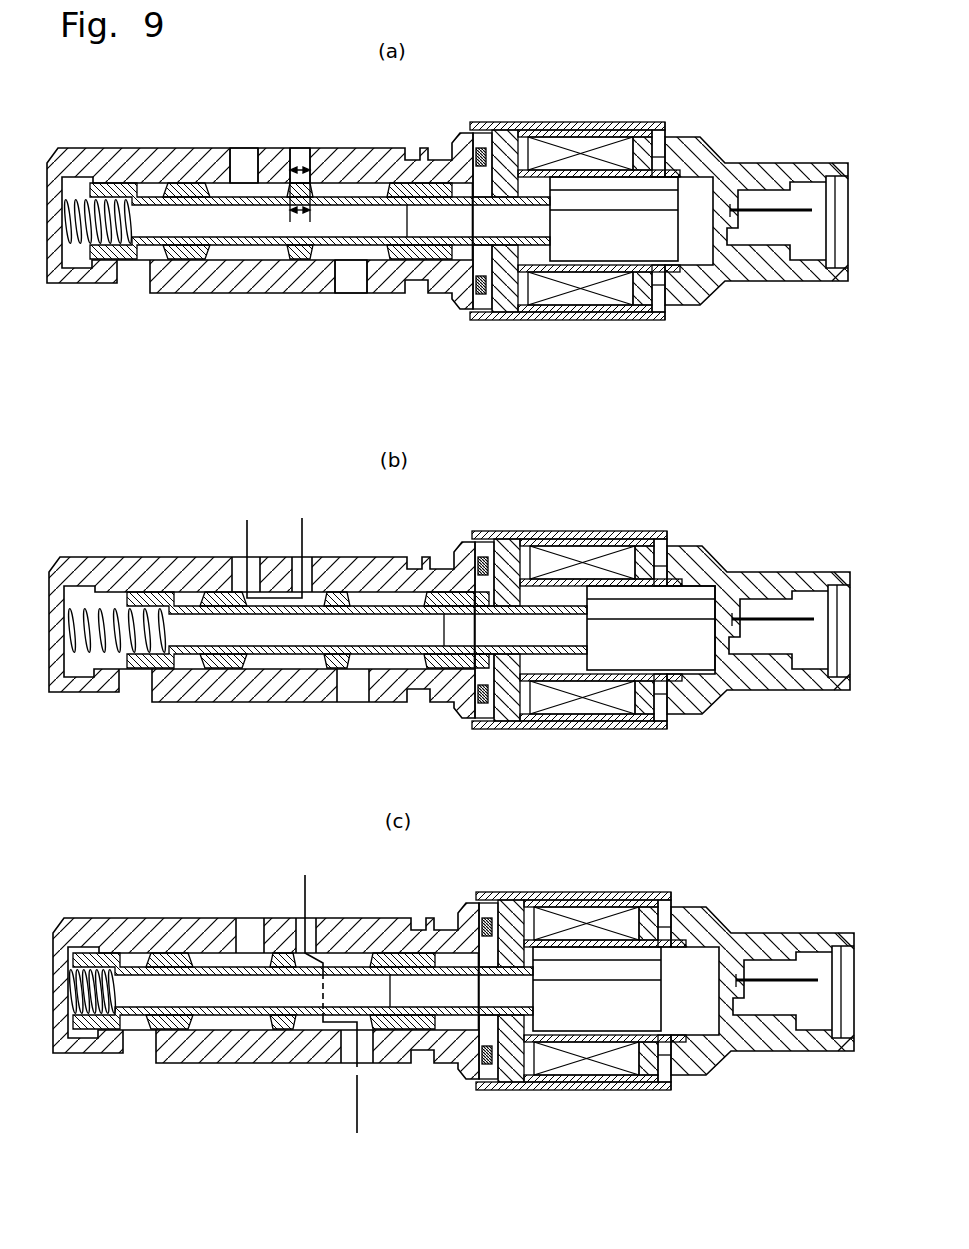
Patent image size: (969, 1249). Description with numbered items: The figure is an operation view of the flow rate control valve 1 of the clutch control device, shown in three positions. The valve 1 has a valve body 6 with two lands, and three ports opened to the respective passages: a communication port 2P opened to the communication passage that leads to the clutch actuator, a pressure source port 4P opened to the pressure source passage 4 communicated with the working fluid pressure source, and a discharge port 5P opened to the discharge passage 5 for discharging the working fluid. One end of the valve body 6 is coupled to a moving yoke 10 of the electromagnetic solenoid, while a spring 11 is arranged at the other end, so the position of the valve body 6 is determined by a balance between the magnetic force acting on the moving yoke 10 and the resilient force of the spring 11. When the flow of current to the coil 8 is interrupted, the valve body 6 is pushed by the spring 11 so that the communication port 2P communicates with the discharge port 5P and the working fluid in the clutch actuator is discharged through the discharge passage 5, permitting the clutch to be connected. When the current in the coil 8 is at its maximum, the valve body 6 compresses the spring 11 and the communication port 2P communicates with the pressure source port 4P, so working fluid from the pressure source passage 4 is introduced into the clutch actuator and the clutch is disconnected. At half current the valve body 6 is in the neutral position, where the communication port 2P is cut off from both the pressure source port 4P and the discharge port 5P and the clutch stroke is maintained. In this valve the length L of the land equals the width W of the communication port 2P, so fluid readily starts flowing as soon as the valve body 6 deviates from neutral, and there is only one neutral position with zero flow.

The flow rate control valve 1 is at (197, 296).
The communication port 2P is at (296, 148).
The pressure source passage 4 is at (343, 1094).
The pressure source port 4P is at (350, 296).
The discharge passage 5 is at (257, 543).
The discharge port 5P is at (242, 148).
The valve body 6 is at (353, 196).
The coil 8 is at (580, 146).
The moving yoke 10 is at (578, 254).
The spring 11 is at (79, 250).
The width of the communication port W is at (305, 166).
The length of the land L is at (300, 223).